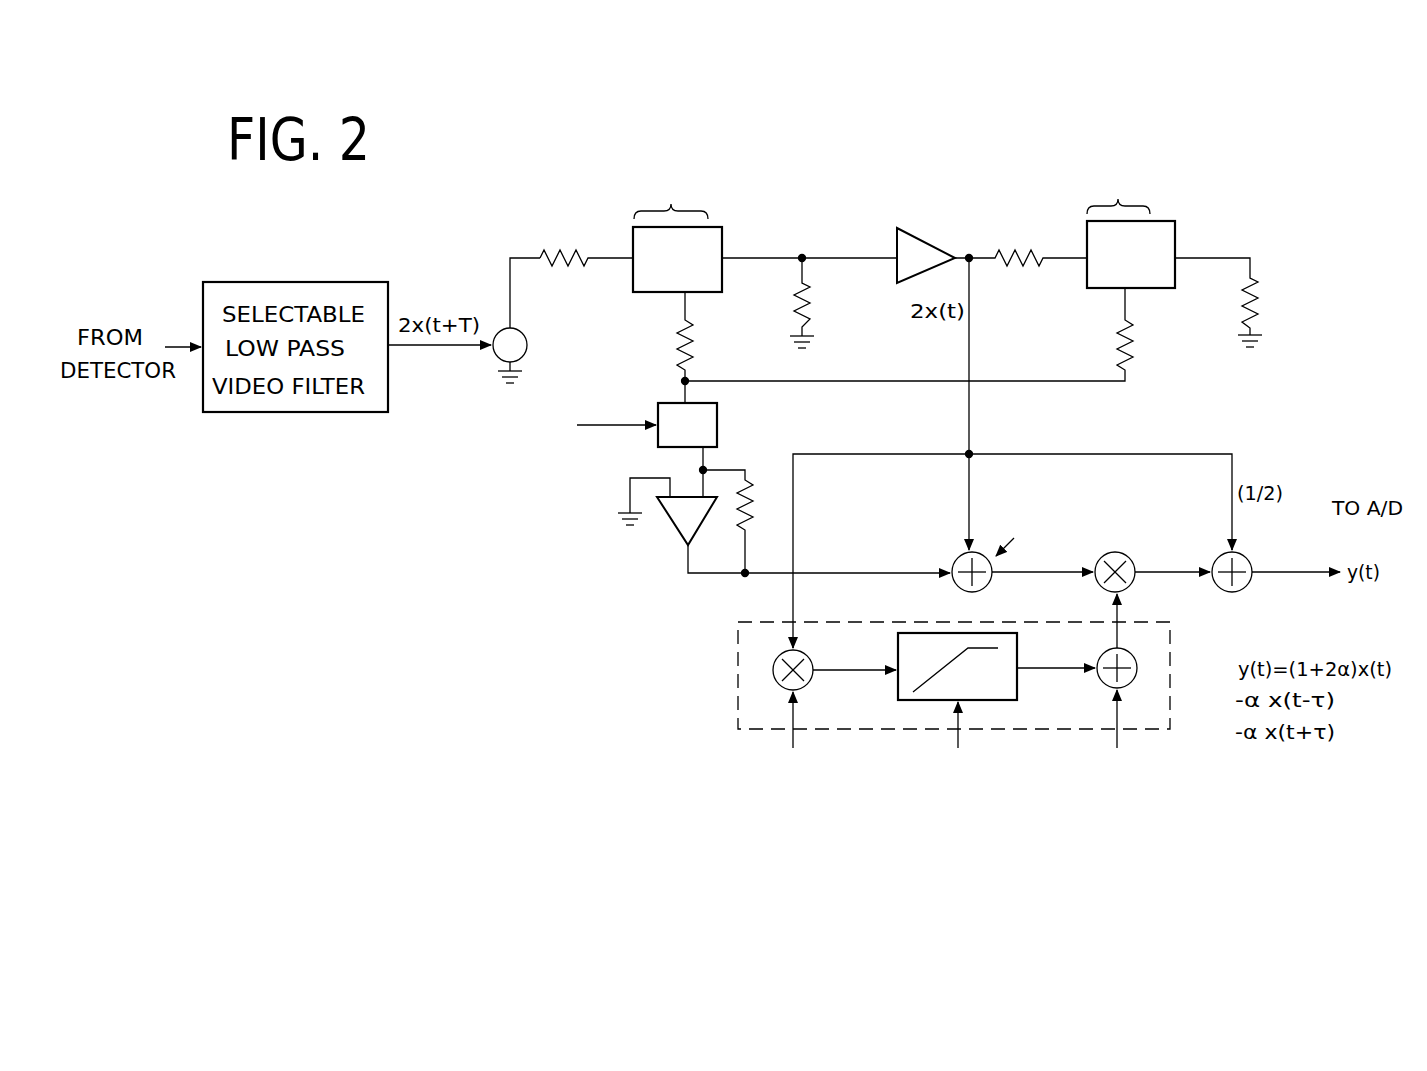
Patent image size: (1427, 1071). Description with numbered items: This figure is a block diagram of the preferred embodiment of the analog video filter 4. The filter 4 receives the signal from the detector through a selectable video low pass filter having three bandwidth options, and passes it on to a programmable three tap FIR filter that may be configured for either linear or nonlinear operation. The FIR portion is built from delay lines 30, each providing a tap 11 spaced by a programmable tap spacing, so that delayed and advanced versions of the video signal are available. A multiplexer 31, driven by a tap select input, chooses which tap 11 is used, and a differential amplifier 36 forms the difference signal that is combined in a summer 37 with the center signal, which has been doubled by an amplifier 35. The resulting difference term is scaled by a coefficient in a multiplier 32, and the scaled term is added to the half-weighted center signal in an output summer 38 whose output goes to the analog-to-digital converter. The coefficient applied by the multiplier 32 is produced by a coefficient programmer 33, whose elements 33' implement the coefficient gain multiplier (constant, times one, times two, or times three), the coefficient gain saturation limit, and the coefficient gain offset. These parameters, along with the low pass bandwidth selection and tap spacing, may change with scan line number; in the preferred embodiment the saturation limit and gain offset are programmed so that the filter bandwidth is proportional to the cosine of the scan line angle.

The analog video filter 4 is at (552, 569).
The tap resistors / delayed signal taps 11 is at (689, 299).
The three tap FIR filter element 30 is at (722, 234).
The three tap FIR filter element 31 is at (658, 449).
The three tap FIR filter element 32 is at (1134, 586).
The three tap FIR filter element 33 is at (890, 686).
The coefficient programmer elements (multiplier, saturation limiter, gain/offset add 33' is at (974, 686).
The three tap FIR filter element 35 is at (918, 232).
The three tap FIR filter element 36 is at (673, 526).
The three tap FIR filter element 37 is at (953, 558).
The three tap FIR filter element 38 is at (1252, 558).